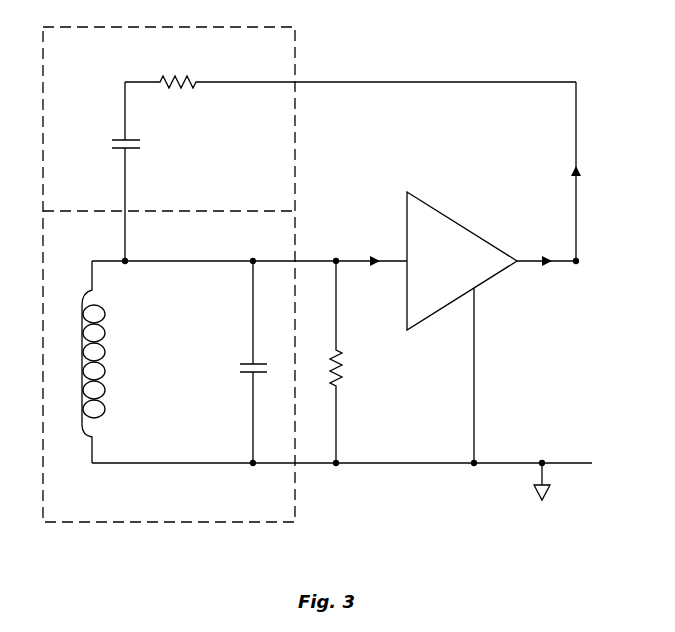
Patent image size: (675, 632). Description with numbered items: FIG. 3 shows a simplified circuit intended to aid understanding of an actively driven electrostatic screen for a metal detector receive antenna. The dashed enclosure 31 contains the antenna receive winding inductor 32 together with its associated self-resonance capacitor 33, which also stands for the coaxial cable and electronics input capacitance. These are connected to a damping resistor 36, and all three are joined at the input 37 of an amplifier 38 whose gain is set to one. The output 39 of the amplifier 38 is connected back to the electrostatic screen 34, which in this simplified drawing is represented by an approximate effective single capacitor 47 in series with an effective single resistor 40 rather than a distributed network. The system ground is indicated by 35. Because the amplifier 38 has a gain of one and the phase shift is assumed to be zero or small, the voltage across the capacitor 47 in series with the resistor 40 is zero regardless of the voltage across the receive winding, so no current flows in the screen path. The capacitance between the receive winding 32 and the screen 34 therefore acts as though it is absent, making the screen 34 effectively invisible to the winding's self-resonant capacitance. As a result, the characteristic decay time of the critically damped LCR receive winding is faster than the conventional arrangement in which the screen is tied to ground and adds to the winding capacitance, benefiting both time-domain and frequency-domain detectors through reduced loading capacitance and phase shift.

The resonant circuit (dashed box) 31 is at (125, 522).
The antenna receive winding inductor 32 is at (105, 370).
The self-resonance capacitor 33 is at (243, 360).
The electrostatic screen 34 is at (295, 62).
The system ground 35 is at (403, 465).
The damping resistor 36 is at (345, 372).
The input of amplifier 37 is at (357, 243).
The amplifier 38 is at (466, 225).
The output of amplifier 39 is at (576, 228).
The effective single resistor 40 is at (183, 75).
The effective single capacitor 47 is at (128, 150).